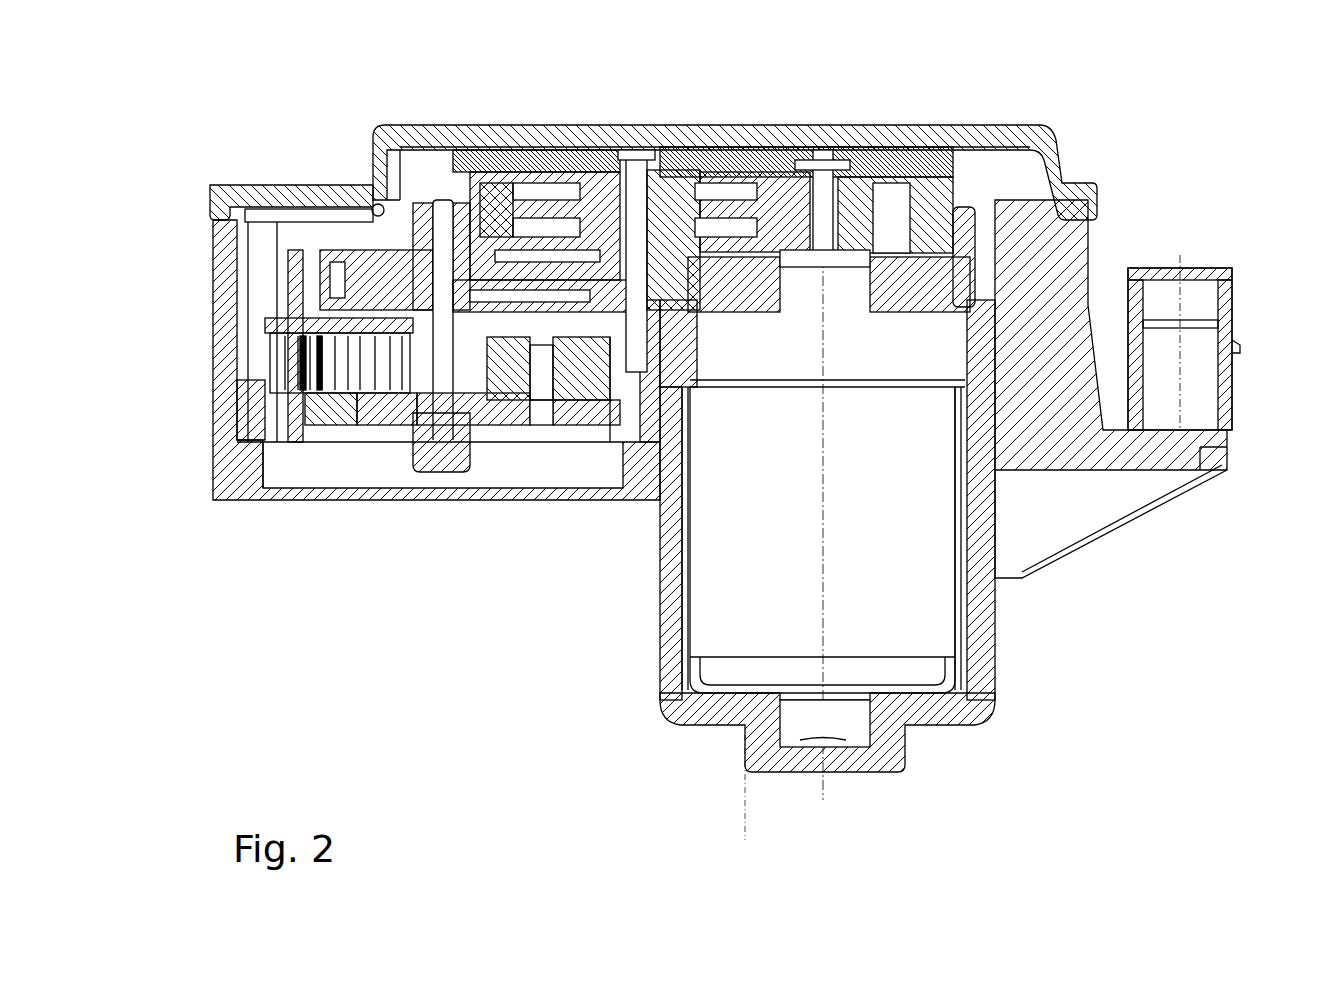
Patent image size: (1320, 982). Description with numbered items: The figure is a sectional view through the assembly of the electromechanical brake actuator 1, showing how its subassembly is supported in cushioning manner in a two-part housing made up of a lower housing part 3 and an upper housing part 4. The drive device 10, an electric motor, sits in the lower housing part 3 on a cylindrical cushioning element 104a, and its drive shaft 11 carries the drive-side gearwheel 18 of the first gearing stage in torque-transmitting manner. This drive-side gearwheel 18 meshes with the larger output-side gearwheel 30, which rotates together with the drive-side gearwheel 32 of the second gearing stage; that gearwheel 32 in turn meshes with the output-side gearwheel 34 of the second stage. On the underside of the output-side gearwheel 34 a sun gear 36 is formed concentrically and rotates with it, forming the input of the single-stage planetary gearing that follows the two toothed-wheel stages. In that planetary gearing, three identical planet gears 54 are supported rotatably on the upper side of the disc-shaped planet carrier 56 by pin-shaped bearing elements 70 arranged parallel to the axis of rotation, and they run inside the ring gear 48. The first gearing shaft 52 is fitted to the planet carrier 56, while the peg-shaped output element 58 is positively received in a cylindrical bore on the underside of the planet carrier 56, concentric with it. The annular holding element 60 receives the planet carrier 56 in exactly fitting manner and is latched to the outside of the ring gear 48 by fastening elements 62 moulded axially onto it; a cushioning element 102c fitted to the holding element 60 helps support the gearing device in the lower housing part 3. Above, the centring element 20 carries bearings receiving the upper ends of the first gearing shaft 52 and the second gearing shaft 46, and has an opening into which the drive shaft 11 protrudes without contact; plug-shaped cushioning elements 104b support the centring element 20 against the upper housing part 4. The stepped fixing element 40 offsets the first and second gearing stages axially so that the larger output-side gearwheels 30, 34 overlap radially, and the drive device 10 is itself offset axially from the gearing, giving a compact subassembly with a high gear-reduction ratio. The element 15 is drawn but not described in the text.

The electromechanical brake actuator 1 is at (1168, 83).
The lower housing part 3 is at (230, 480).
The upper housing part 4 is at (440, 195).
The drive device 10 is at (866, 582).
The drive shaft 11 is at (860, 155).
The connector 15 is at (1196, 385).
The drive-side gearwheel 18 is at (800, 180).
The centring element 20 is at (545, 185).
The output-side gearwheel 30 is at (745, 160).
The drive-side gearwheel 32 is at (626, 160).
The output-side gearwheel 34 is at (295, 330).
The sun gear 36 is at (377, 267).
The fixing element 40 is at (973, 287).
The second gearing shaft 46 is at (652, 172).
The ring gear 48 is at (263, 320).
The first gearing shaft 52 is at (470, 170).
The planet gears 54 is at (307, 407).
The planet carrier 56 is at (340, 413).
The output element 58 is at (440, 470).
The holding element 60 is at (275, 400).
The fastening elements 62 is at (290, 330).
The pin-shaped bearing elements 70 is at (547, 413).
The cushioning element 102c is at (240, 417).
The cushioning element 104a is at (747, 733).
The cushioning element 104b is at (956, 150).